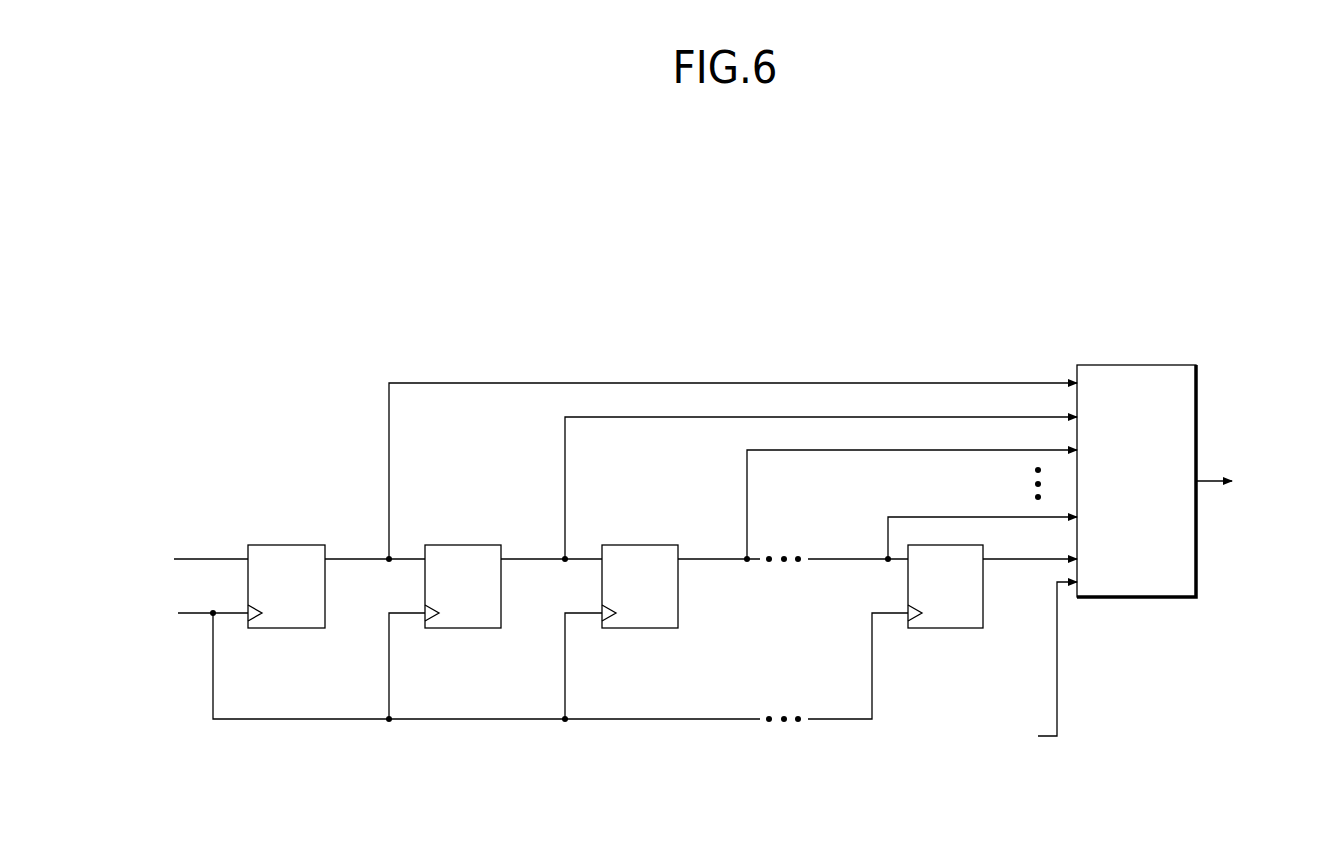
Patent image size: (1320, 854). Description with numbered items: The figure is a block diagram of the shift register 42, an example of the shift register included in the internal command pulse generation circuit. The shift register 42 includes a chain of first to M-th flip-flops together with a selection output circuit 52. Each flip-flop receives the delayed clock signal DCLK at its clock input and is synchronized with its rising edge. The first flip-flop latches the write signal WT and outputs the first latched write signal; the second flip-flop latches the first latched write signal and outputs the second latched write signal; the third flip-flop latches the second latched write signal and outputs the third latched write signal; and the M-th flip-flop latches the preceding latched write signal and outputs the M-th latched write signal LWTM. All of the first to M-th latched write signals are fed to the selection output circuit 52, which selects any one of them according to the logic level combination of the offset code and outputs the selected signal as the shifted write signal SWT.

The shift register 42 is at (1201, 222).
The selection output circuit 52 is at (1131, 600).